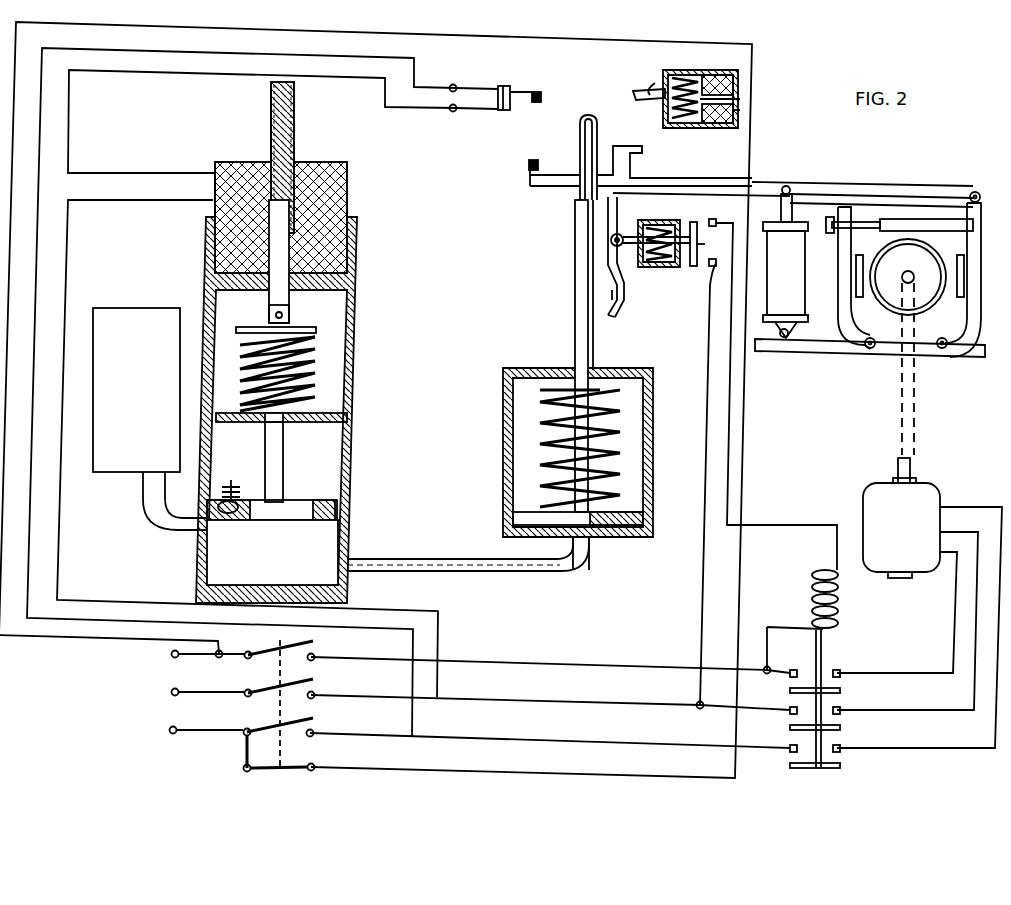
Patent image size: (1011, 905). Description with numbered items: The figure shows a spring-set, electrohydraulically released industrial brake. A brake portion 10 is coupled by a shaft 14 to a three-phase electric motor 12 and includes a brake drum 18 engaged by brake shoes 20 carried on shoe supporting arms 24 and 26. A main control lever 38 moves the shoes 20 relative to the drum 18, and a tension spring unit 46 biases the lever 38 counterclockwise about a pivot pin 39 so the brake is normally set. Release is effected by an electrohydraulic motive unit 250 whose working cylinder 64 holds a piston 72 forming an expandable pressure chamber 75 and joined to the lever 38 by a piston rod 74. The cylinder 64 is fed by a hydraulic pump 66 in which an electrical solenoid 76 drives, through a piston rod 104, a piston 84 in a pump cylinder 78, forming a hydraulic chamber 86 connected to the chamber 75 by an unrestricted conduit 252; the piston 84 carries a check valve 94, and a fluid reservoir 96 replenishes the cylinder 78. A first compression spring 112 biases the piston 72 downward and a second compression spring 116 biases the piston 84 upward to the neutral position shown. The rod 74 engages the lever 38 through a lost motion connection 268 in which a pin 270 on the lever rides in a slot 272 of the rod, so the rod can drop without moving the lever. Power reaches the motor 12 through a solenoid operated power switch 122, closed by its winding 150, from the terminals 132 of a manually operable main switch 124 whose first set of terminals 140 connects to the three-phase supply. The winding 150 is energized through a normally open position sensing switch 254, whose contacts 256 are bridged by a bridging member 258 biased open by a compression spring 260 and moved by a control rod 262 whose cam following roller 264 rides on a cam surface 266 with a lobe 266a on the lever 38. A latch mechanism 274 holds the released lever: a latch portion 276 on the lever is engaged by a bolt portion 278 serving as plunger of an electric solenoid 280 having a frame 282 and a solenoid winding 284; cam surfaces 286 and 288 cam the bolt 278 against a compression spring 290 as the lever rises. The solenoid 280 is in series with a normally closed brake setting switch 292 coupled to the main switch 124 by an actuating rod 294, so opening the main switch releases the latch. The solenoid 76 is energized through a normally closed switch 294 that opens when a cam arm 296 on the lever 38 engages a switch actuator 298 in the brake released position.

The brake portion 10 is at (1008, 252).
The three-phase electric motor 12 is at (930, 495).
The shaft 14 is at (912, 468).
The brake drum 18 is at (928, 248).
The brake shoes 20 is at (862, 297).
The shoe supporting arm 24 is at (970, 292).
The shoe supporting arm 26 is at (842, 300).
The main control lever 38 is at (890, 180).
The pivot pin 39 is at (978, 192).
The tension spring unit 46 is at (808, 266).
The working fluid cylinder 64 is at (598, 370).
The electrically operated hydraulic pump 66 is at (196, 558).
The piston 72 is at (622, 512).
The piston rod 74 is at (575, 352).
The expandable pressure chamber 75 is at (603, 540).
The electrical solenoid 76 is at (214, 162).
The pump cylinder 78 is at (192, 532).
The piston 84 is at (258, 520).
The expandable hydraulic chamber 86 is at (318, 578).
The check or bypass valve 94 is at (231, 483).
The fluid reservoir 96 is at (150, 320).
The piston rod 104 is at (283, 472).
The first compression spring 112 is at (612, 420).
The second compression spring 116 is at (312, 360).
The solenoid operated power switch 122 is at (825, 660).
The main control switch 124 is at (278, 640).
The terminals 132 is at (314, 656).
The first set of terminals 140 is at (245, 660).
The solenoid winding 150 is at (838, 600).
The electrohydraulic motive unit 250 is at (542, 322).
The unrestricted conduit 252 is at (500, 571).
The position sensing switch 254 is at (638, 268).
The contacts 256 is at (714, 219).
The bridging member 258 is at (711, 244).
The compression spring 260 is at (658, 225).
The control rod 262 is at (690, 262).
The cam following roller 264 is at (618, 233).
The cam surface 266 is at (622, 305).
The lobe 266a is at (617, 322).
The lost motion connection 268 is at (580, 114).
The pin 270 is at (576, 185).
The slot 272 is at (583, 140).
The latch mechanism 274 is at (745, 96).
The latch portion 276 is at (633, 160).
The bolt portion 278 is at (650, 85).
The electric solenoid 280 is at (742, 70).
The stator or frame 282 is at (738, 128).
The solenoid winding 284 is at (745, 106).
The cam surface 286 is at (642, 146).
The cam surface 288 is at (634, 94).
The compression spring 290 is at (686, 70).
The brake setting switch 292 is at (296, 775).
The actuating rod; normally closed switch 294 is at (520, 90).
The cam arm 296 is at (529, 165).
The switch actuator 298 is at (536, 104).